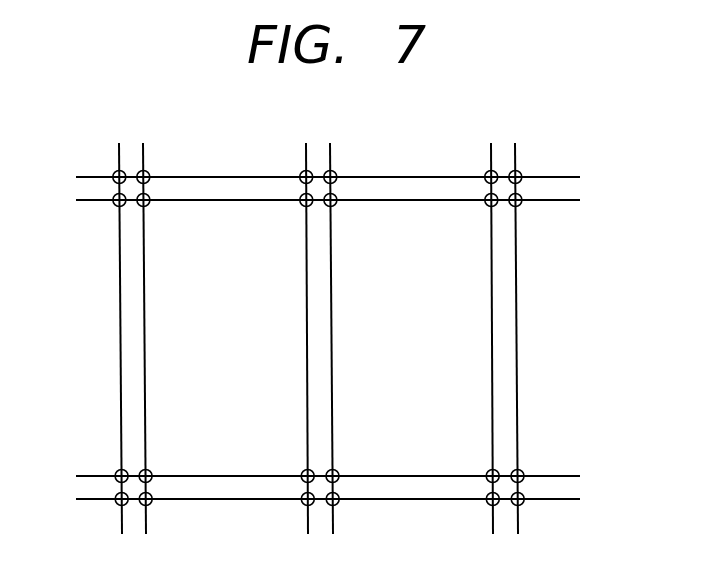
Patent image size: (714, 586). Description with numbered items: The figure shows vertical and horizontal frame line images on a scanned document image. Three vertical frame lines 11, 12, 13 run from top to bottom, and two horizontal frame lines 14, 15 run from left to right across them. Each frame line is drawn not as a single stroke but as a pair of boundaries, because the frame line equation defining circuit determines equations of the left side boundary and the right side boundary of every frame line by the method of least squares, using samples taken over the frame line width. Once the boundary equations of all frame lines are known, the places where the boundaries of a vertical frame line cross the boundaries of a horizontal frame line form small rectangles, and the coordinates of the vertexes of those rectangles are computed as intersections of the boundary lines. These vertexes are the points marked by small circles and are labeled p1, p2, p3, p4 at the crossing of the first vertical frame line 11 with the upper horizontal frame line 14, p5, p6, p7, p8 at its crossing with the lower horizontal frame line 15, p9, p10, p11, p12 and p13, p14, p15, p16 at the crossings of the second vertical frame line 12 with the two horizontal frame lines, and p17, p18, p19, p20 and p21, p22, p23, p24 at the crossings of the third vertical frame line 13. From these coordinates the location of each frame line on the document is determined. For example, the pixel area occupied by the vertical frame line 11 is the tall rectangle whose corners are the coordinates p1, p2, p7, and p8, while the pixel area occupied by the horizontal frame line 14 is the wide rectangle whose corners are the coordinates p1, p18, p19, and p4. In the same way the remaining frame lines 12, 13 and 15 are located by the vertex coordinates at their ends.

The vertical frame line 11 is at (138, 322).
The vertical frame line 12 is at (327, 322).
The vertical frame line 13 is at (512, 320).
The horizontal frame line 14 is at (400, 178).
The horizontal frame line 15 is at (402, 478).
The vertex coordinate p1 is at (107, 163).
The vertex coordinate p2 is at (156, 163).
The vertex coordinate p3 is at (156, 216).
The vertex coordinate p4 is at (107, 216).
The vertex coordinate p5 is at (109, 460).
The vertex coordinate p6 is at (158, 460).
The vertex coordinate p7 is at (158, 515).
The vertex coordinate p8 is at (109, 515).
The vertex coordinate p9 is at (294, 163).
The vertex coordinate p10 is at (350, 163).
The vertex coordinate p11 is at (350, 216).
The vertex coordinate p12 is at (287, 216).
The vertex coordinate p13 is at (289, 460).
The vertex coordinate p14 is at (353, 460).
The vertex coordinate p15 is at (353, 515).
The vertex coordinate p16 is at (289, 515).
The vertex coordinate p17 is at (472, 163).
The vertex coordinate p18 is at (536, 163).
The vertex coordinate p19 is at (536, 216).
The vertex coordinate p20 is at (472, 216).
The vertex coordinate p21 is at (474, 460).
The vertex coordinate p22 is at (538, 460).
The vertex coordinate p23 is at (538, 515).
The vertex coordinate p24 is at (474, 515).